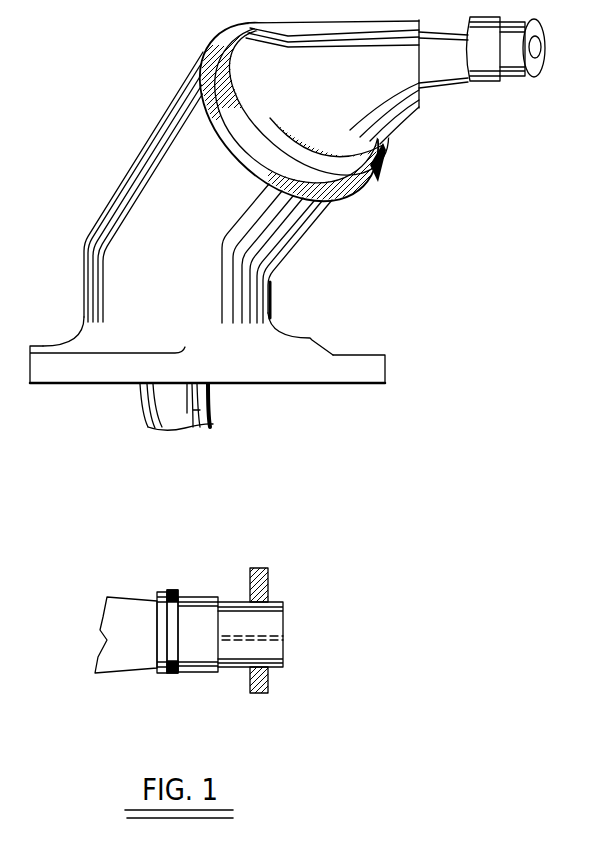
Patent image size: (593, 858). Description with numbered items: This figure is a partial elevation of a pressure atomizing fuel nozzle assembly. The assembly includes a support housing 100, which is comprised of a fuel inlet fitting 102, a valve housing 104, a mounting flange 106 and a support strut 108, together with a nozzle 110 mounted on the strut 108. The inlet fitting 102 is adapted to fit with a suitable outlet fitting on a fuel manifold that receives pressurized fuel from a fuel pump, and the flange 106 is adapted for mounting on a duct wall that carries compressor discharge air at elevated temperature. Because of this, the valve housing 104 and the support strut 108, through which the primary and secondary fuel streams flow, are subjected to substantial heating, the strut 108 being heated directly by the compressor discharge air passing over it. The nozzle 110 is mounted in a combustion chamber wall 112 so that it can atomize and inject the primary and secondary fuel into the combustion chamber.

The support housing 100 is at (146, 158).
The fuel inlet fitting 102 is at (480, 76).
The valve housing 104 is at (97, 228).
The mounting flange 106 is at (372, 365).
The support strut 108 is at (213, 410).
The nozzle 110 is at (235, 665).
The combustion chamber wall 112 is at (267, 580).